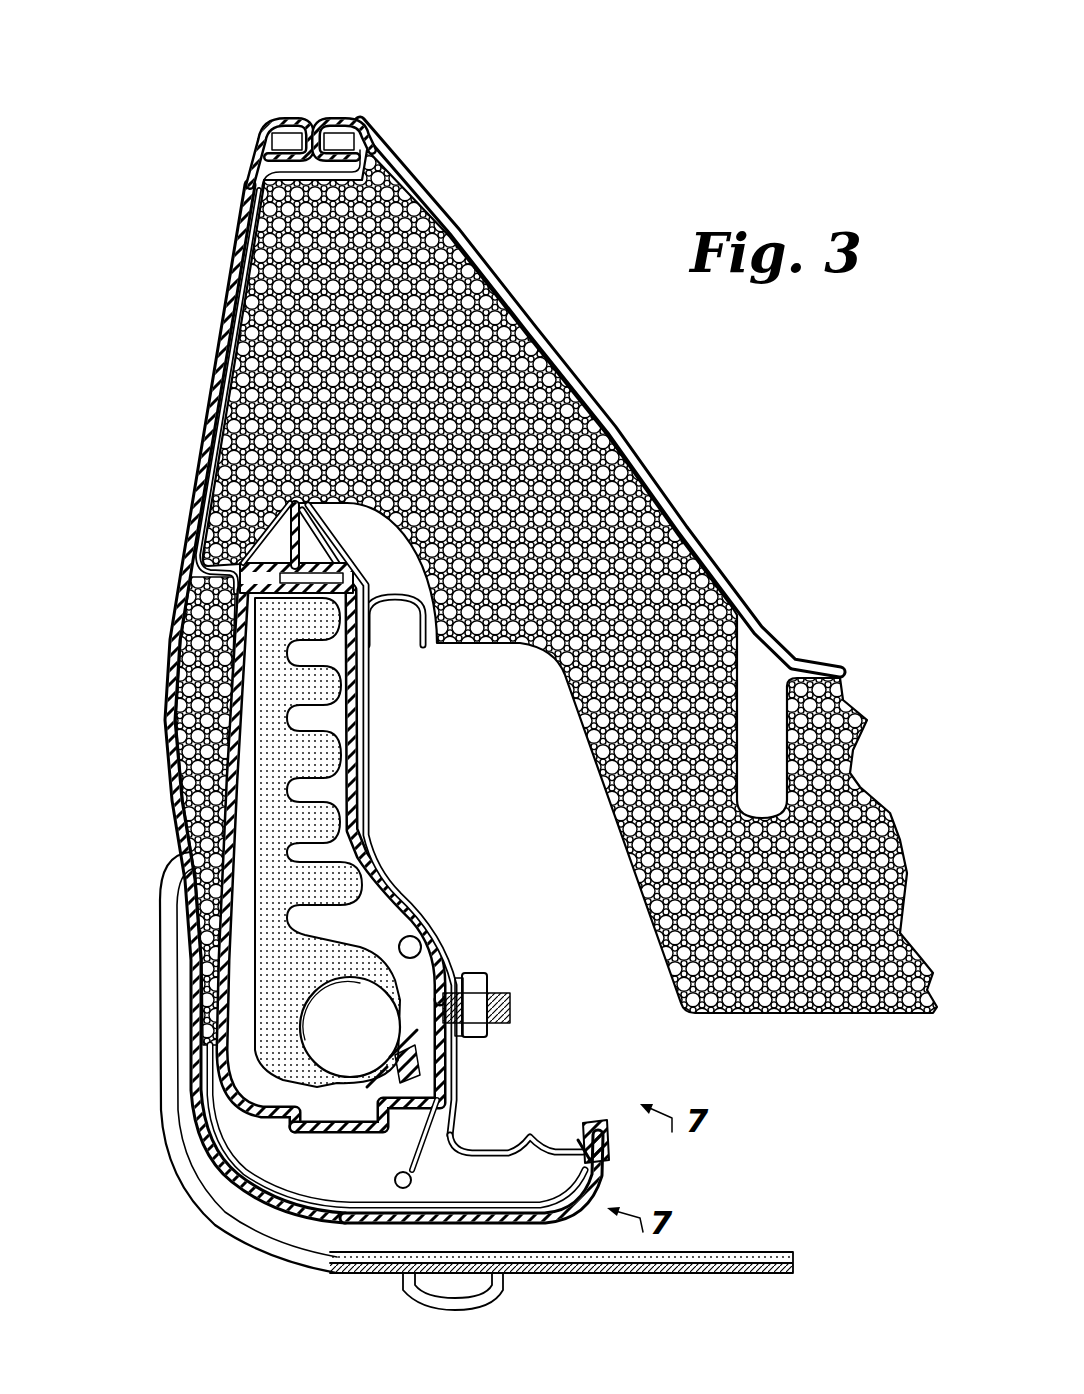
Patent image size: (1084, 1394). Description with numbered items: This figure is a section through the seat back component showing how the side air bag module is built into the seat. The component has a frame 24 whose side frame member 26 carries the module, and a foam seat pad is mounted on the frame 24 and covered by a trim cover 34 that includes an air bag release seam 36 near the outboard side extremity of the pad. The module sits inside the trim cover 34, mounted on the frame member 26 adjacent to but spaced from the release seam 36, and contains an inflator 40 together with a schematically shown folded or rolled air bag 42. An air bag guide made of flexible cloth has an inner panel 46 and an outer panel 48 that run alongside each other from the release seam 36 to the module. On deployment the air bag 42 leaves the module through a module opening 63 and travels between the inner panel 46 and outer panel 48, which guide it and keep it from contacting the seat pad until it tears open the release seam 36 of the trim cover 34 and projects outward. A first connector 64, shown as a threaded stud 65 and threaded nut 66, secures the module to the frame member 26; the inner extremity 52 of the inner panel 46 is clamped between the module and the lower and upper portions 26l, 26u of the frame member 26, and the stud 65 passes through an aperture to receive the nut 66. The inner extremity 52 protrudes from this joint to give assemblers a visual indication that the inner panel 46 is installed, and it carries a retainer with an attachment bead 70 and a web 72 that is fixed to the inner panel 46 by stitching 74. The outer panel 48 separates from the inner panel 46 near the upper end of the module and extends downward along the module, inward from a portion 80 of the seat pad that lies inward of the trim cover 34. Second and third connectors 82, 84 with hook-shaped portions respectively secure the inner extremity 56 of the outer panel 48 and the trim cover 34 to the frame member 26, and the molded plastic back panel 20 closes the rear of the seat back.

The back panel 20 is at (726, 1285).
The frame 24 is at (522, 1178).
The frame member 26 is at (533, 1130).
The upper portion of frame member 26u is at (367, 770).
The lower portion of frame member 26l is at (455, 1085).
The trim cover 34 is at (183, 580).
The air bag release seam 36 is at (335, 93).
The inflator 40 is at (305, 1036).
The air bag 42 is at (250, 824).
The inner panel 46 is at (372, 553).
The outer panel 48 is at (180, 630).
The inner extremity of inner panel 52 is at (462, 957).
The inner extremity of outer panel 56 is at (537, 1216).
The module opening 63 is at (240, 548).
The first connector 64 is at (500, 975).
The threaded stud 65 is at (507, 1013).
The threaded nut 66 is at (465, 953).
The attachment bead 70 is at (415, 1290).
The web 72 is at (407, 1162).
The stitching 74 is at (420, 1140).
The portion of seat pad 80 is at (195, 662).
The second connector 82 is at (585, 1150).
The third connector 84 is at (600, 1130).